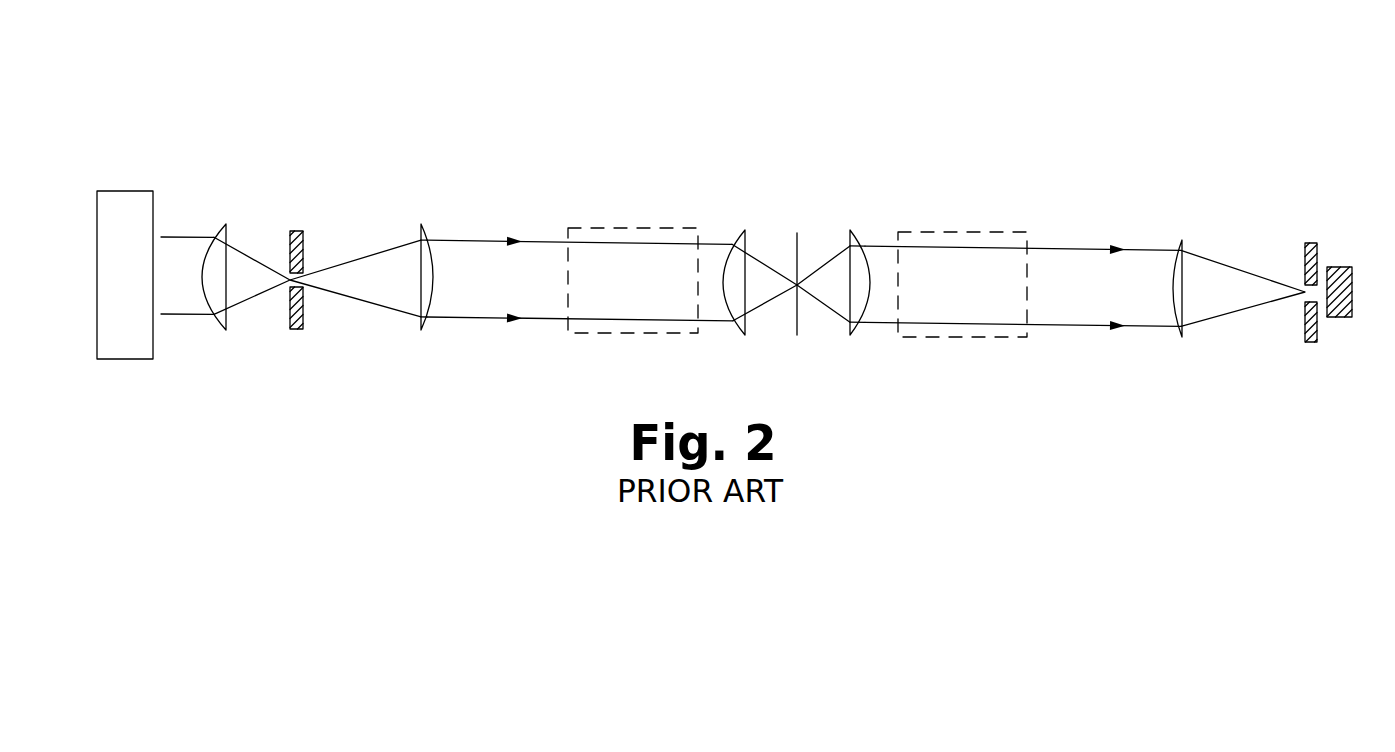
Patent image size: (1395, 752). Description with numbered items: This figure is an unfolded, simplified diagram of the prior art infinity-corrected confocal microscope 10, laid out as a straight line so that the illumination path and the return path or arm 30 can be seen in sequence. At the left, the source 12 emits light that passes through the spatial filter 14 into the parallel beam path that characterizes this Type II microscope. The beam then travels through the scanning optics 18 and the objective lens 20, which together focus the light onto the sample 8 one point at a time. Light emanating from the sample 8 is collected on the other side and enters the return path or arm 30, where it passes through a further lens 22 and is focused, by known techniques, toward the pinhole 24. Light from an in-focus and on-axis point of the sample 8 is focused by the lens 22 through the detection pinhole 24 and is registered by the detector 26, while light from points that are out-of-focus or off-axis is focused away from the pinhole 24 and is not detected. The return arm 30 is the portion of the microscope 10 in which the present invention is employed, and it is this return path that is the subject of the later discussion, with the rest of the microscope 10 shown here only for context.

The infinity-corrected confocal microscope 10 is at (657, 130).
The source 12 is at (140, 191).
The spatial filter 14 is at (205, 208).
The scanning optics 18 is at (613, 227).
The objective lens 20 is at (735, 242).
The sample 8 is at (800, 238).
The return path or arm 30 is at (1357, 185).
The focusing lens 22 is at (1182, 244).
The pinhole 24 is at (1303, 298).
The detector 26 is at (1340, 317).